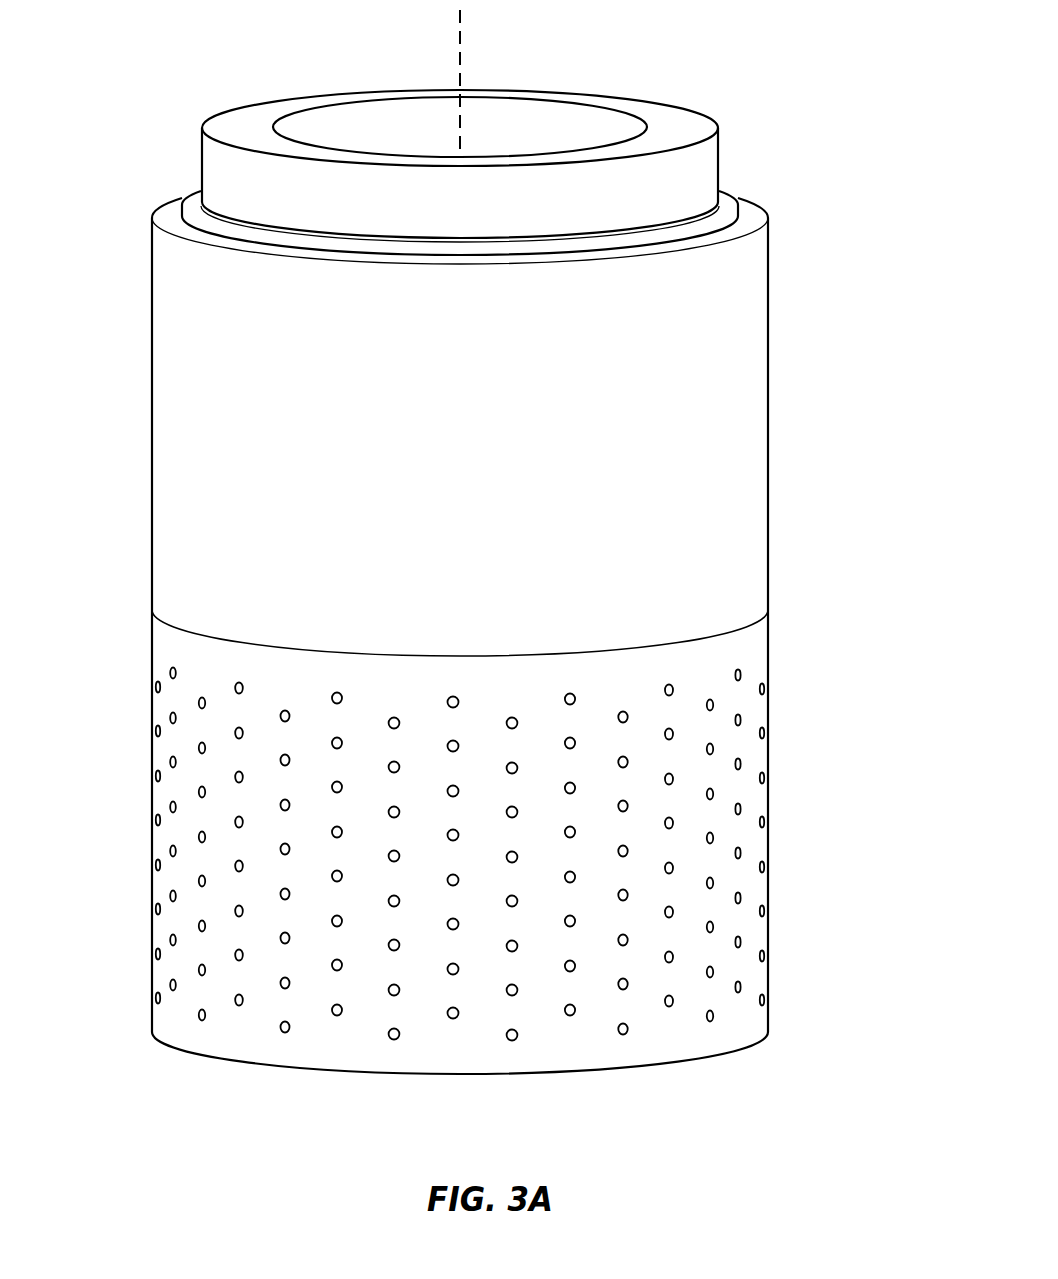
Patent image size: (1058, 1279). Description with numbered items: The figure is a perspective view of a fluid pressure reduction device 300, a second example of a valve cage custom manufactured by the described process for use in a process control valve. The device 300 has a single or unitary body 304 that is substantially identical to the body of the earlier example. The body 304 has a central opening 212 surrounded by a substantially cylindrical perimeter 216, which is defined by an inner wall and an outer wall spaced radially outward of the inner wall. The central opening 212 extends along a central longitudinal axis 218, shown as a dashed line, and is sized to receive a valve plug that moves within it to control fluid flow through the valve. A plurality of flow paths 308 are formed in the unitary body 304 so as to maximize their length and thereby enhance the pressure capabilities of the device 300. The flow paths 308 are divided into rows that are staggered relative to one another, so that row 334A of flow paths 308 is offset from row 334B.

The fluid pressure reduction device 300 is at (806, 183).
The unitary body 304 is at (742, 440).
The flow paths 308 is at (591, 1038).
The central opening 212 is at (643, 122).
The substantially cylindrical perimeter 216 is at (680, 128).
The central longitudinal axis 218 is at (461, 47).
The row of flow paths 334A is at (169, 673).
The row of flow paths 334B is at (198, 705).